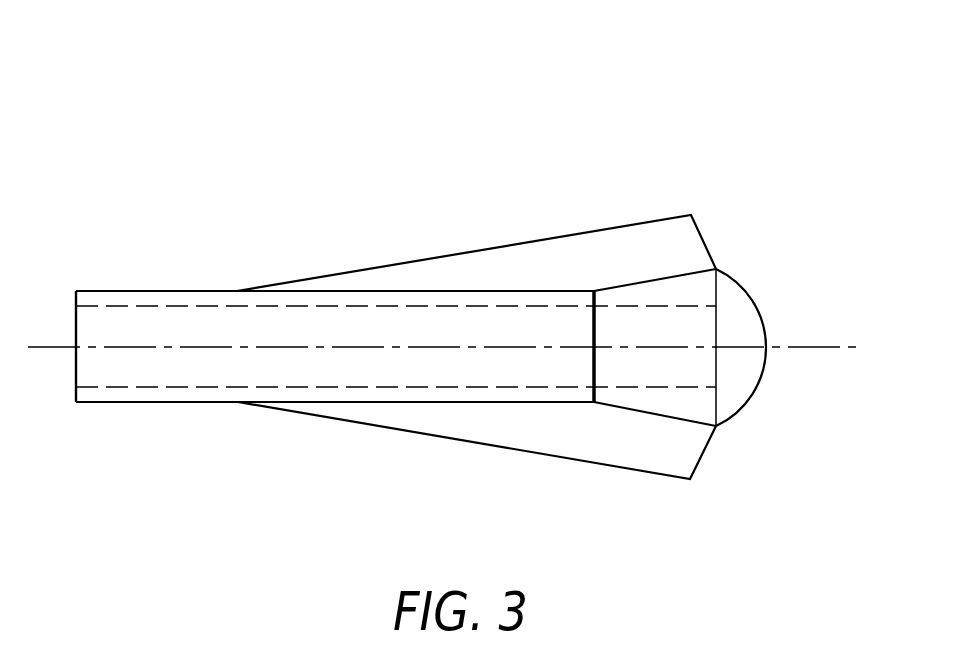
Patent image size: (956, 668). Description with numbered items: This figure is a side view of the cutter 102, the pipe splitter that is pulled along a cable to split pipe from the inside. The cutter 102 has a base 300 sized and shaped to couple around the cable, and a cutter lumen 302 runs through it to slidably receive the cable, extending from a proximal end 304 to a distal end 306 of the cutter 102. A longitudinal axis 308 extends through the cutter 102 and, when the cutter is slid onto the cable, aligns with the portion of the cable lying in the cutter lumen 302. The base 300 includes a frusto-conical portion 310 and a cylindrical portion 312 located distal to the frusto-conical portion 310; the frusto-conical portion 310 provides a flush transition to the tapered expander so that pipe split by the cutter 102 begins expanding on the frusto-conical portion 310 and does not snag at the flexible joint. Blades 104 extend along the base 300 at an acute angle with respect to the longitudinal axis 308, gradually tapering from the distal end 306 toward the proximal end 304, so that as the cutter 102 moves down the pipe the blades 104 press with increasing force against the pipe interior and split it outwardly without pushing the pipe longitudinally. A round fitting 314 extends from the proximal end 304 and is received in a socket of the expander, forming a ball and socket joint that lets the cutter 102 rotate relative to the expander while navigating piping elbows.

The cutter 102 is at (191, 66).
The blades 104 is at (483, 258).
The base 300 is at (204, 291).
The cutter lumen 302 is at (87, 365).
The proximal end 304 is at (752, 370).
The distal end 306 is at (75, 312).
The longitudinal axis 308 is at (836, 347).
The frusto-conical portion 310 is at (647, 290).
The cylindrical portion 312 is at (220, 402).
The fitting 314 is at (742, 412).